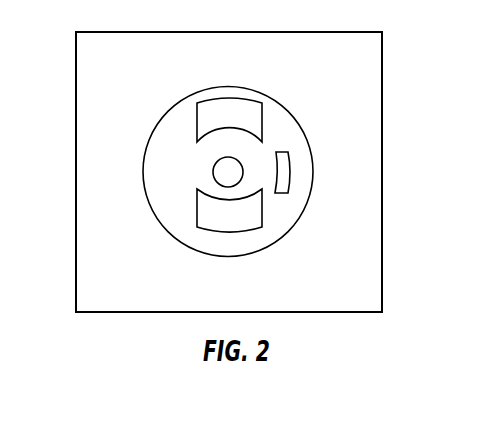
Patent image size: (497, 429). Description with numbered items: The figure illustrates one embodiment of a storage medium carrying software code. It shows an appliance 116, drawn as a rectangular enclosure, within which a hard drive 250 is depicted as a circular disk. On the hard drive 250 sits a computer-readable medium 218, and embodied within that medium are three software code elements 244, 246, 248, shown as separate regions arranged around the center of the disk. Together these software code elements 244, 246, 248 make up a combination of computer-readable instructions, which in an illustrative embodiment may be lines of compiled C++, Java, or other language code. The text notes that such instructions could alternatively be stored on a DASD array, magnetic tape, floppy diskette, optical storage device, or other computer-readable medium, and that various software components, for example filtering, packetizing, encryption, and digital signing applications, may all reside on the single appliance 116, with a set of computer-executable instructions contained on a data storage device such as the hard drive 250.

The appliance 116 is at (128, 45).
The computer-readable medium 218 is at (191, 186).
The software code element 244 is at (229, 99).
The software code element 246 is at (288, 172).
The software code element 248 is at (233, 233).
The hard drive 250 is at (163, 128).